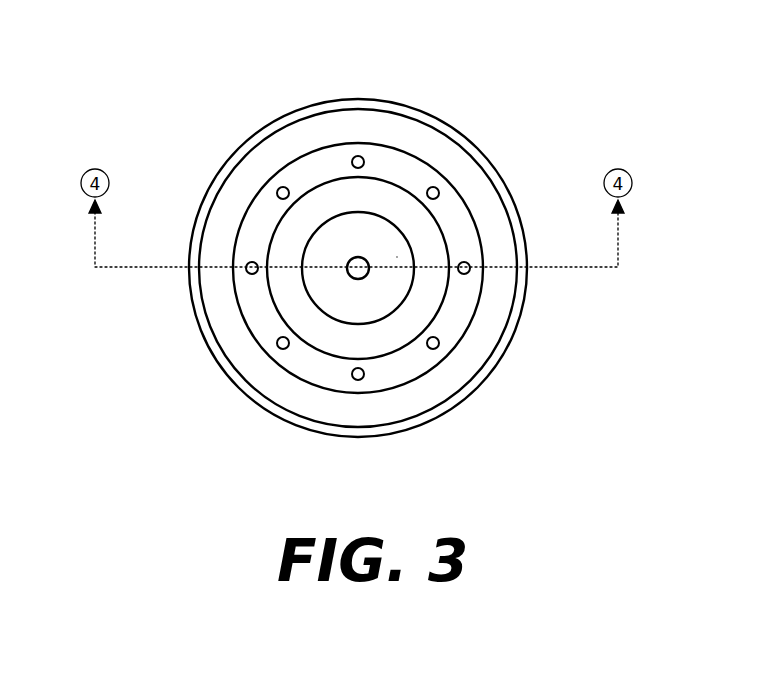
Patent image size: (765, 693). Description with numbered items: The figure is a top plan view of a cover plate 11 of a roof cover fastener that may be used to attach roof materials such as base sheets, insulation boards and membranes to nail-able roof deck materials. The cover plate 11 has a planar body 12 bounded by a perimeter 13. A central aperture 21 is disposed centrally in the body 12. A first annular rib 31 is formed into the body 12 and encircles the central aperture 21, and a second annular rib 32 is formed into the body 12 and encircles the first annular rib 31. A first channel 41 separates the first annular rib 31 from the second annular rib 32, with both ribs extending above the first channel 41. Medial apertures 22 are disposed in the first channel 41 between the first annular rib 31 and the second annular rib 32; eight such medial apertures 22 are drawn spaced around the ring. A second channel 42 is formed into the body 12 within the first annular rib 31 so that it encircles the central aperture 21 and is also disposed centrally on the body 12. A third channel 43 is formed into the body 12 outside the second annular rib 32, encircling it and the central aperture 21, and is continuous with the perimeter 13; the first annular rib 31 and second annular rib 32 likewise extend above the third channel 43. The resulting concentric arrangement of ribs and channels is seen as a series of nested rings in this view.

The cover plate 11 is at (233, 73).
The planar body 12 is at (198, 303).
The perimeter 13 is at (193, 222).
The central aperture 21 is at (358, 268).
The medial aperture 22 is at (357, 157).
The first annular rib 31 is at (290, 303).
The second annular rib 32 is at (297, 392).
The first channel 41 is at (457, 318).
The second channel 42 is at (397, 257).
The third channel 43 is at (527, 300).